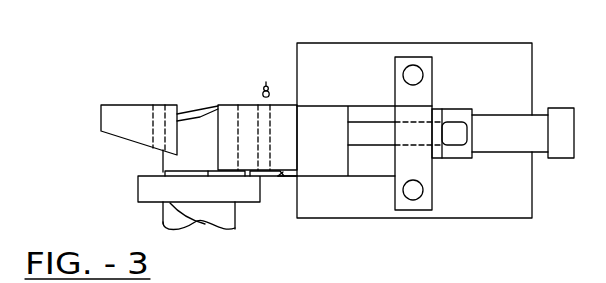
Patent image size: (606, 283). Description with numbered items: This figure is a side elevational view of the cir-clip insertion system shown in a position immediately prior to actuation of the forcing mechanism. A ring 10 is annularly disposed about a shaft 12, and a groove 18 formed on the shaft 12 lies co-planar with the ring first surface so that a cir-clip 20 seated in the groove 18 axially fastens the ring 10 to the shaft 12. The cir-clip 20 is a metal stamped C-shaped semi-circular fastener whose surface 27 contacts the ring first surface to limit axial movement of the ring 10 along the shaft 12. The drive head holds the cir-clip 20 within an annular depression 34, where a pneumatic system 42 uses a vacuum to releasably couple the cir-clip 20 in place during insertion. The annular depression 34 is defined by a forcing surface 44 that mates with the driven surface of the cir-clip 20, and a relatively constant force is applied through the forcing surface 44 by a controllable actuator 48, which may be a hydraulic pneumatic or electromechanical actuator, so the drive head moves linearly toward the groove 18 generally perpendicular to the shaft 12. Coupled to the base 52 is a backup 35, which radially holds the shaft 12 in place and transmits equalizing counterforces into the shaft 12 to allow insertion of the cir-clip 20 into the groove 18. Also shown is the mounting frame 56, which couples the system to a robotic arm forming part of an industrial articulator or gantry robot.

The ring 10 is at (150, 178).
The shaft 12 is at (236, 229).
The groove 18 is at (183, 203).
The cir-clip 20 is at (250, 170).
The surface 27 is at (231, 178).
The annular depression 34 is at (275, 170).
The backup 35 is at (117, 125).
The pneumatic system 42 is at (266, 91).
The forcing surface 44 is at (278, 176).
The actuator 48 is at (518, 127).
The base 52 is at (422, 97).
The mounting frame 56 is at (453, 137).